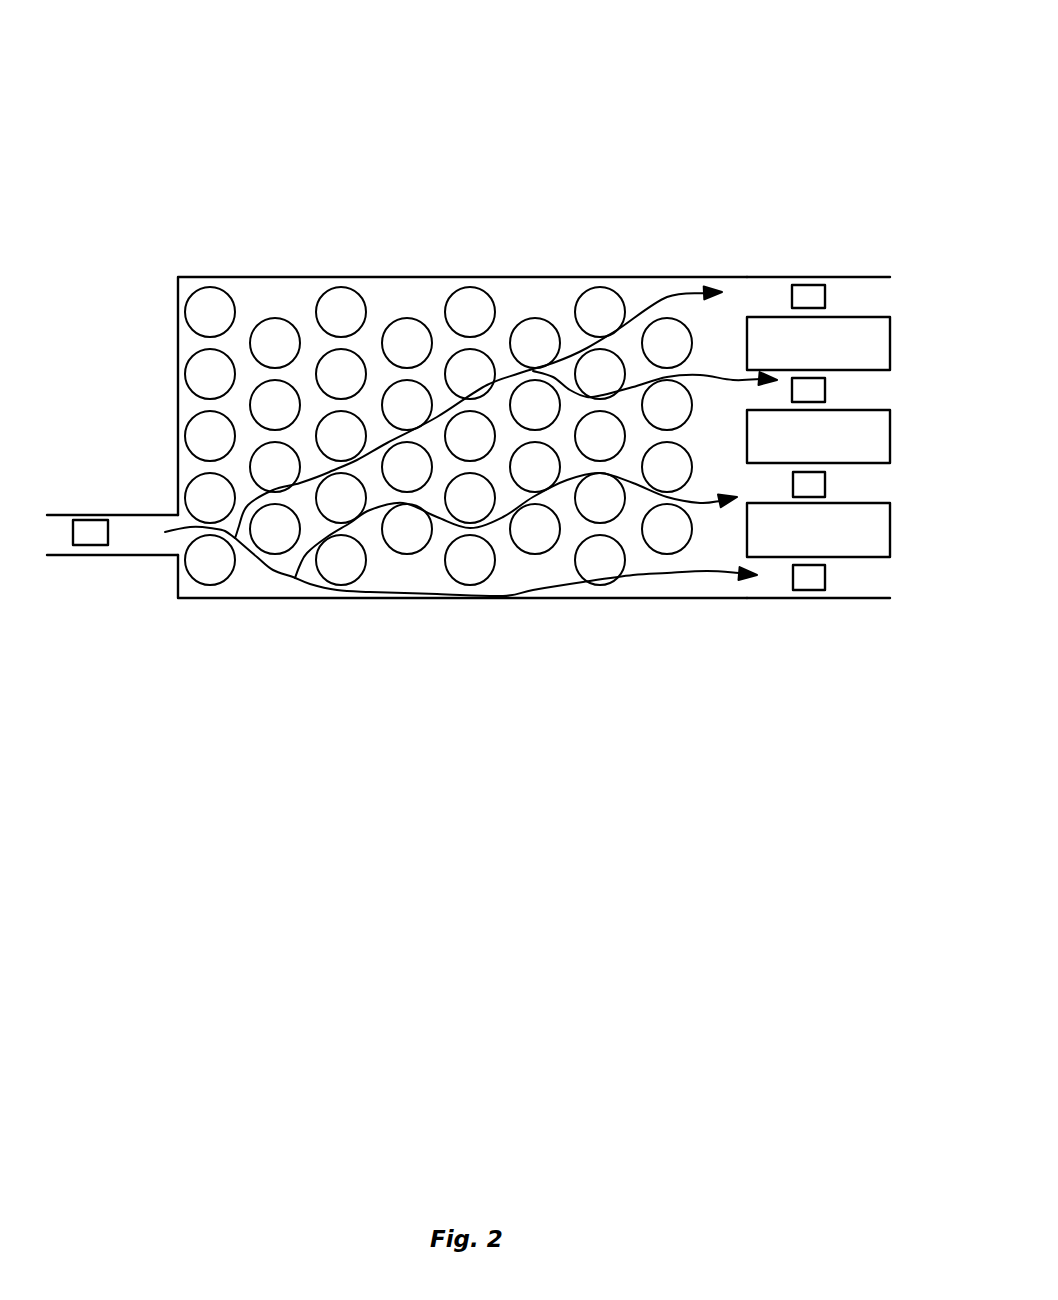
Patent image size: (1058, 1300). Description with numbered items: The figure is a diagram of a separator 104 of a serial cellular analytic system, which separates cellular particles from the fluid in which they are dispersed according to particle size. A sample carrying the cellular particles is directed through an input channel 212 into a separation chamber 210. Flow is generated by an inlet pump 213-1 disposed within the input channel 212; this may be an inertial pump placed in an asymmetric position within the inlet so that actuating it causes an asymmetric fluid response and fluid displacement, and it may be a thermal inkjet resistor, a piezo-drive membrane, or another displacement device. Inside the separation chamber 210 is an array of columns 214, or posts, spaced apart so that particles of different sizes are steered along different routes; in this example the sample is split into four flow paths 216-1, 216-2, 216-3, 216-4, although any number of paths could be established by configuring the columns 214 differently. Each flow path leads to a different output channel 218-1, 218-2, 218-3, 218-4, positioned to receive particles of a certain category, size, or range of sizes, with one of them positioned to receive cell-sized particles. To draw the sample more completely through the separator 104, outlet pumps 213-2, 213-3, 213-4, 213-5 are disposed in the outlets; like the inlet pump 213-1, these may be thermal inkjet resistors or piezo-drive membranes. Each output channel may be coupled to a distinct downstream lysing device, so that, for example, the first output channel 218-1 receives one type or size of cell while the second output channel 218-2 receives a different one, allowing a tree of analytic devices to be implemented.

The separator 104 is at (337, 80).
The separation chamber 210 is at (295, 295).
The input channel 212 is at (128, 537).
The inlet pump 213-1 is at (93, 537).
The outlet pump 213-2 is at (805, 298).
The outlet pump 213-3 is at (805, 398).
The outlet pump 213-4 is at (813, 483).
The outlet pump 213-5 is at (803, 578).
The column 214 is at (208, 315).
The first flow path 216-1 is at (575, 355).
The second flow path 216-2 is at (742, 372).
The third flow path 216-3 is at (305, 563).
The fourth flow path 216-4 is at (680, 573).
The first output channel 218-1 is at (873, 307).
The second output channel 218-2 is at (873, 398).
The third output channel 218-3 is at (873, 490).
The fourth output channel 218-4 is at (873, 582).